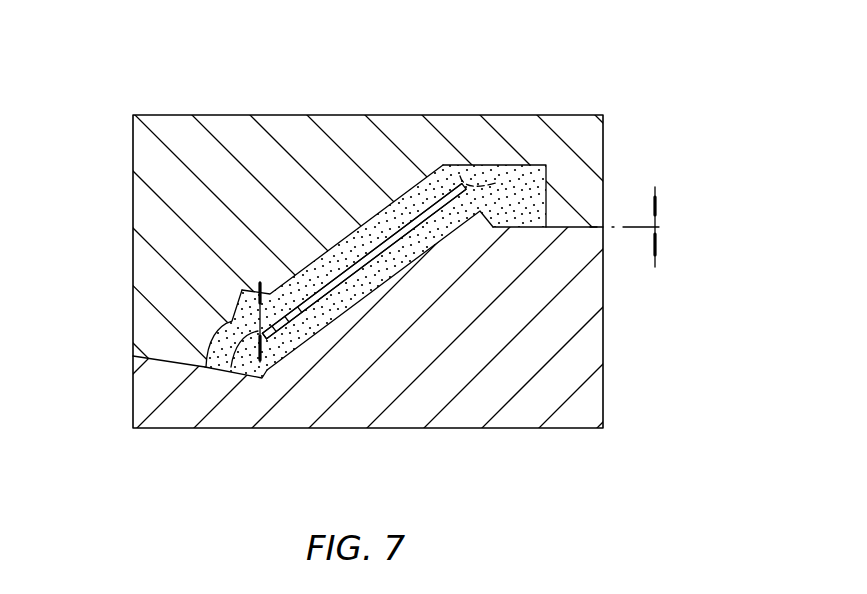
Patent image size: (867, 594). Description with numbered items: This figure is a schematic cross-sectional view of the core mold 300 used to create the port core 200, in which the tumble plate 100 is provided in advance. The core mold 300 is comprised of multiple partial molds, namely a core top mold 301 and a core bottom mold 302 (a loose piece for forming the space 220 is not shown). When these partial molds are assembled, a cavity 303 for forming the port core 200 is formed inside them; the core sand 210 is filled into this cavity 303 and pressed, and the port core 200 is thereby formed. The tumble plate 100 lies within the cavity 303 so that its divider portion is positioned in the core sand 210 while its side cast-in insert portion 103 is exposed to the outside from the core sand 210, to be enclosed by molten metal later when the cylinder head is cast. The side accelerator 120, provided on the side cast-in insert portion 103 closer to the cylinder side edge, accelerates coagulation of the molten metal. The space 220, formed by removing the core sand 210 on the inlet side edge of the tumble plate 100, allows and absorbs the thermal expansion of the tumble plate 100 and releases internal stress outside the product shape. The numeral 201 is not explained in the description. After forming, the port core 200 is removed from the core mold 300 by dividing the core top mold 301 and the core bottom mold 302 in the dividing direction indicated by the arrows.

The core mold 300 is at (194, 54).
The core top mold 301 is at (146, 207).
The core bottom mold 302 is at (152, 392).
The cavity 303 is at (347, 250).
The tumble plate 100 is at (386, 208).
The side cast-in insert portion 103 is at (340, 277).
The side accelerator 120 is at (301, 357).
The port core 200 is at (434, 130).
The insert body 201 is at (537, 163).
The core sand 210 is at (536, 202).
The space 220 is at (496, 182).